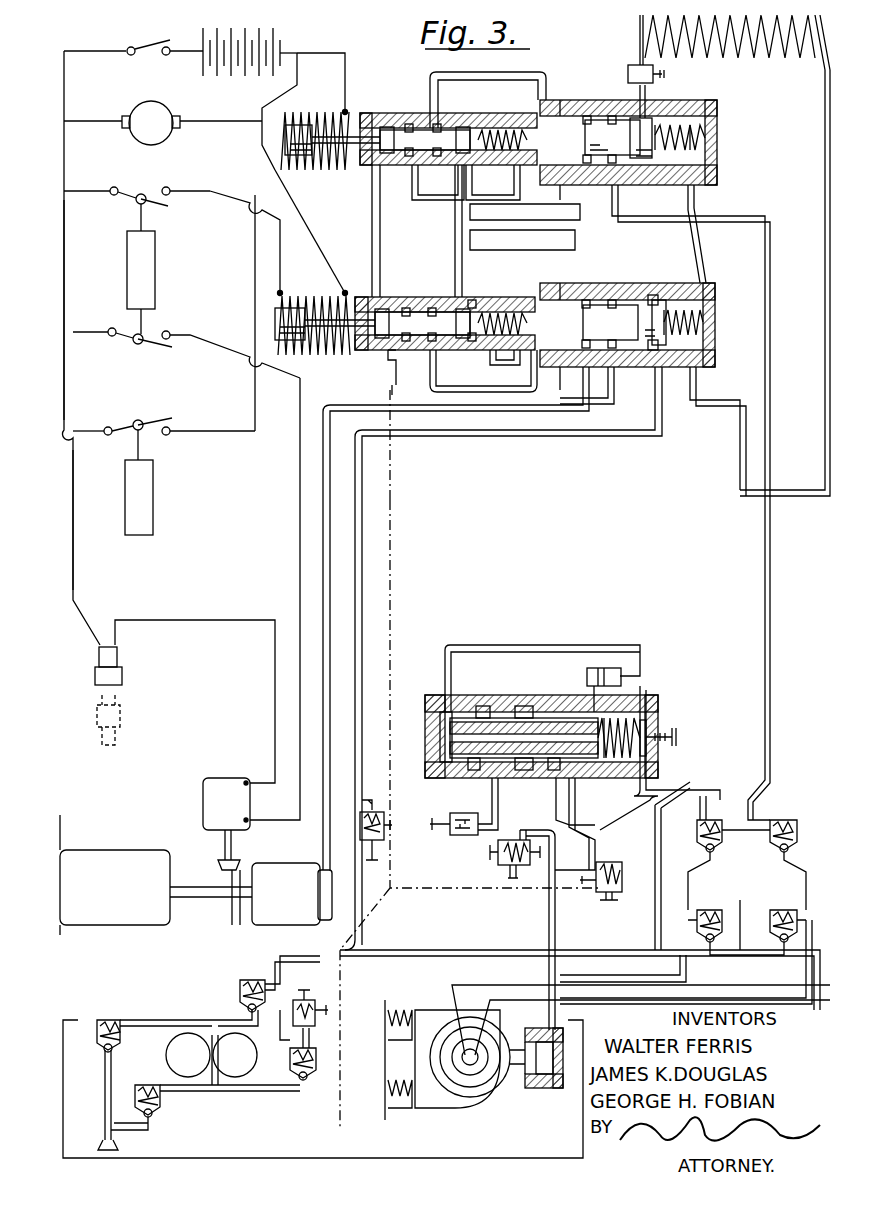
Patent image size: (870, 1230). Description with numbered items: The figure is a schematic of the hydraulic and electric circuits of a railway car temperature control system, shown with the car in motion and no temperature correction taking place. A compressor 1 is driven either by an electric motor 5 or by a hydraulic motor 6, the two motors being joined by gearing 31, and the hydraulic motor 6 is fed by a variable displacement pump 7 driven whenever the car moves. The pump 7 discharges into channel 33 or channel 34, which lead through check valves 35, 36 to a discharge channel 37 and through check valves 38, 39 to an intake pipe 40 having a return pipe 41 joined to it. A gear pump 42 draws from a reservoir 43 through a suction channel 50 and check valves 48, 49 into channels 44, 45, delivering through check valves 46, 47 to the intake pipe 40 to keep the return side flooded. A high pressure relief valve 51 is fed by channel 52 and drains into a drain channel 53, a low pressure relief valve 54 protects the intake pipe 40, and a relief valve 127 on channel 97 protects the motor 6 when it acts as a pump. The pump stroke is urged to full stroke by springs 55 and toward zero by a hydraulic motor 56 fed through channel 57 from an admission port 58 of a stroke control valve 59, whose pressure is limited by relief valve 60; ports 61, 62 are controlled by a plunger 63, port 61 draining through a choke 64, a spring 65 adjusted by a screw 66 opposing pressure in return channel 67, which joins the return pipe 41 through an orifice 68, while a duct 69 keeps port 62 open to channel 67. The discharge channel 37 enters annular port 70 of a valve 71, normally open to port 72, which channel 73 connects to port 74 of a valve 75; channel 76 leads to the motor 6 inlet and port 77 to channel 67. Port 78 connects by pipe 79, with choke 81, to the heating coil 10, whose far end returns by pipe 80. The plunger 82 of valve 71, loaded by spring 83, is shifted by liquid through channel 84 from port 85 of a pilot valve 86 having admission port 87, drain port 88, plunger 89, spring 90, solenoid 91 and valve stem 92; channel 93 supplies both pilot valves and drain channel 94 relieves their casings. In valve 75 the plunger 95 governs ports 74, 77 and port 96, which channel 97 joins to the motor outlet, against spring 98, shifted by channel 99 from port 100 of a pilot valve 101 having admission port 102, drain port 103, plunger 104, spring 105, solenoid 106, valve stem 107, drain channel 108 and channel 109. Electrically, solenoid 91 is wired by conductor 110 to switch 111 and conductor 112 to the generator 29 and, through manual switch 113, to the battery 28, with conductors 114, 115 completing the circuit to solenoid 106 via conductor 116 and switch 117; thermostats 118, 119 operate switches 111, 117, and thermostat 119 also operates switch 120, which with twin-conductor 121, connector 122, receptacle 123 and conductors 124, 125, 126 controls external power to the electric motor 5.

The compressor 1 is at (122, 890).
The electric motor 5 is at (232, 782).
The hydraulic motor 6 is at (292, 894).
The variable displacement pump 7 is at (415, 1110).
The heating coil 10 is at (800, 50).
The storage battery 28 is at (250, 36).
The generator 29 is at (175, 90).
The gearing 31 is at (240, 922).
The channel 33 is at (684, 975).
The channel 34 is at (764, 1002).
The check valve 35 is at (716, 850).
The check valve 36 is at (786, 850).
The discharge channel 37 is at (770, 663).
The check valve 38 is at (712, 910).
The check valve 39 is at (788, 910).
The intake pipe 40 is at (458, 952).
The return pipe 41 is at (655, 922).
The gear pump 42 is at (168, 1066).
The reservoir 43 is at (323, 1089).
The channel 44 is at (178, 1012).
The channel 45 is at (265, 1088).
The check valve 46 is at (240, 990).
The check valve 47 is at (306, 1082).
The check valve 48 is at (112, 1016).
The check valve 49 is at (158, 1100).
The suction channel 50 is at (108, 1100).
The relief valve 51 is at (608, 868).
The channel 52 is at (722, 800).
The drain channel 53 is at (392, 465).
The relief valve 54 is at (306, 998).
The springs 55 is at (408, 1090).
The hydraulic motor 56 is at (553, 1088).
The channel 57 is at (558, 838).
The admission port 58 is at (520, 708).
The stroke control valve 59 is at (656, 766).
The relief valve 60 is at (500, 858).
The port 61 is at (490, 712).
The port 62 is at (548, 778).
The plunger 63 is at (464, 780).
The choke 64 is at (455, 840).
The helical compression spring 65 is at (620, 765).
The screw 66 is at (662, 737).
The return channel 67 is at (738, 438).
The orifice 68 is at (585, 676).
The duct 69 is at (568, 780).
The annular port 70 is at (612, 112).
The valve 71 is at (565, 100).
The annular port 72 is at (583, 110).
The channel 73 is at (570, 229).
The annular port 74 is at (578, 298).
The valve 75 is at (710, 296).
The channel 76 is at (580, 384).
The annular port 77 is at (620, 360).
The annular port 78 is at (650, 108).
The pipe 79 is at (660, 92).
The pipe 80 is at (822, 102).
The choke 81 is at (628, 68).
The plunger 82 is at (595, 137).
The helical compression spring 83 is at (712, 112).
The channel 84 is at (518, 80).
The annular port 85 is at (452, 118).
The pilot valve 86 is at (392, 113).
The admission port 87 is at (476, 168).
The drain port 88 is at (436, 168).
The plunger 89 is at (425, 140).
The helical compression spring 90 is at (520, 116).
The solenoid 91 is at (330, 114).
The valve stem 92 is at (350, 170).
The channel 93 is at (452, 247).
The drain channel 94 is at (380, 233).
The plunger 95 is at (619, 322).
The port 96 is at (672, 367).
The channel 97 is at (628, 428).
The helical compression spring 98 is at (708, 318).
The channel 99 is at (494, 394).
The port 100 is at (432, 306).
The pilot valve 101 is at (360, 296).
The admission port 102 is at (470, 300).
The drain port 103 is at (410, 300).
The plunger 104 is at (422, 323).
The helical compression spring 105 is at (518, 308).
The solenoid 106 is at (316, 292).
The valve stem 107 is at (348, 355).
The drain channel 108 is at (380, 370).
The channel 109 is at (690, 242).
The conductor 110 is at (255, 241).
The switch 111 is at (150, 418).
The conductor 112 is at (64, 234).
The manual switch 113 is at (137, 47).
The conductor 114 is at (345, 53).
The conductor 115 is at (292, 222).
The conductor 116 is at (212, 192).
The switch 117 is at (157, 192).
The thermostat 118 is at (150, 510).
The thermostat 119 is at (150, 257).
The switch 120 is at (152, 332).
The flexible twin-conductor 121 is at (120, 742).
The connector 122 is at (125, 714).
The receptacle 123 is at (97, 672).
The conductor 124 is at (238, 618).
The conductor 125 is at (73, 509).
The conductor 126 is at (298, 455).
The relief valve 127 is at (368, 805).